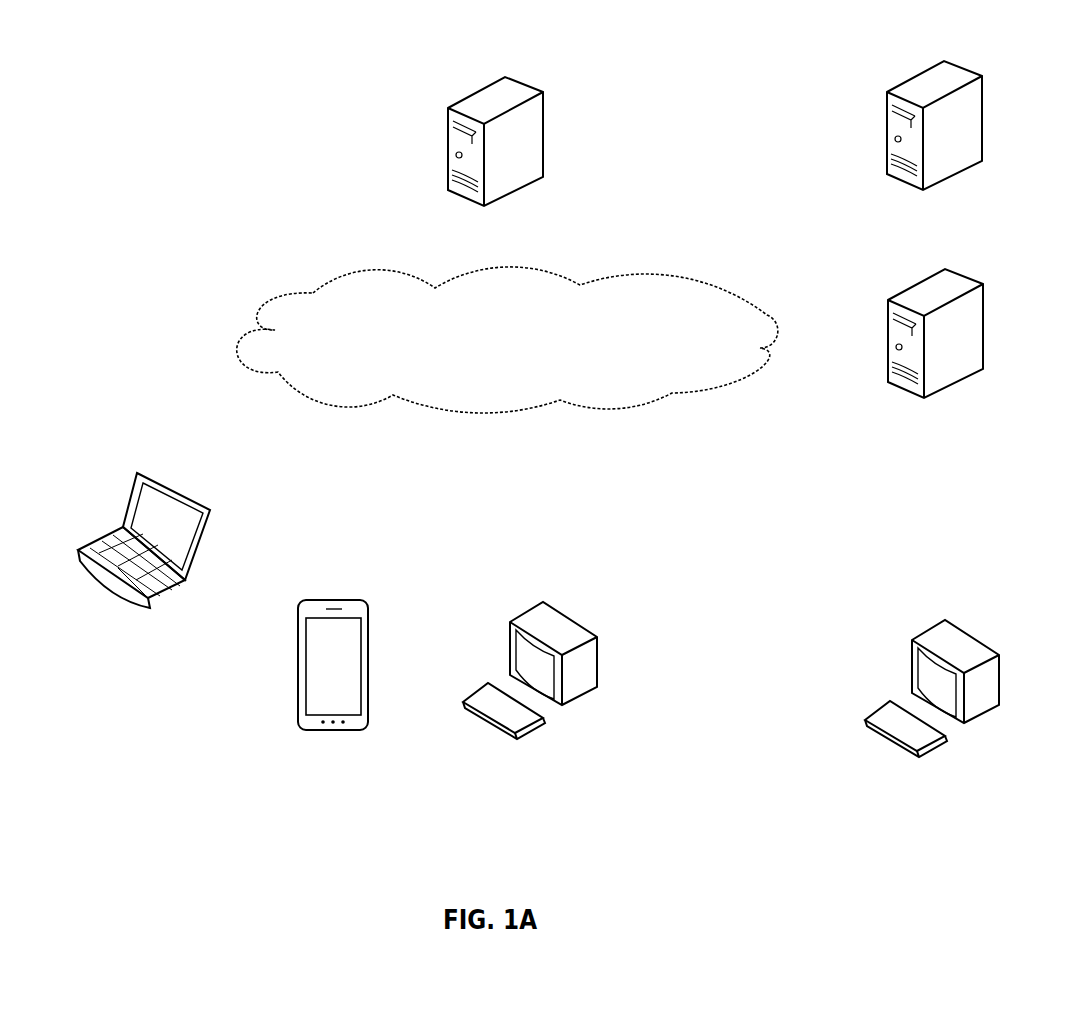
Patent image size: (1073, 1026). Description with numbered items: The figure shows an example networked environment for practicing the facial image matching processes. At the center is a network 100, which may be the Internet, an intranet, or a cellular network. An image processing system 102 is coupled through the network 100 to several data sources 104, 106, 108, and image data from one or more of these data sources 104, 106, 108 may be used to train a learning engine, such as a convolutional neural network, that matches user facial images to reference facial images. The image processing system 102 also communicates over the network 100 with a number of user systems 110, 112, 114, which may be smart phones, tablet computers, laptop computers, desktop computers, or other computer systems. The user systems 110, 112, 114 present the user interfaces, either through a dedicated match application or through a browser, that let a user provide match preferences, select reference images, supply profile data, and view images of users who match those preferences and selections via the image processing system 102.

The network 100 is at (507, 340).
The image processing system 102 is at (502, 256).
The data source 104 is at (670, 264).
The data source 106 is at (771, 340).
The data source 108 is at (682, 403).
The user system 110 is at (502, 426).
The user system 112 is at (333, 403).
The user system 114 is at (236, 363).